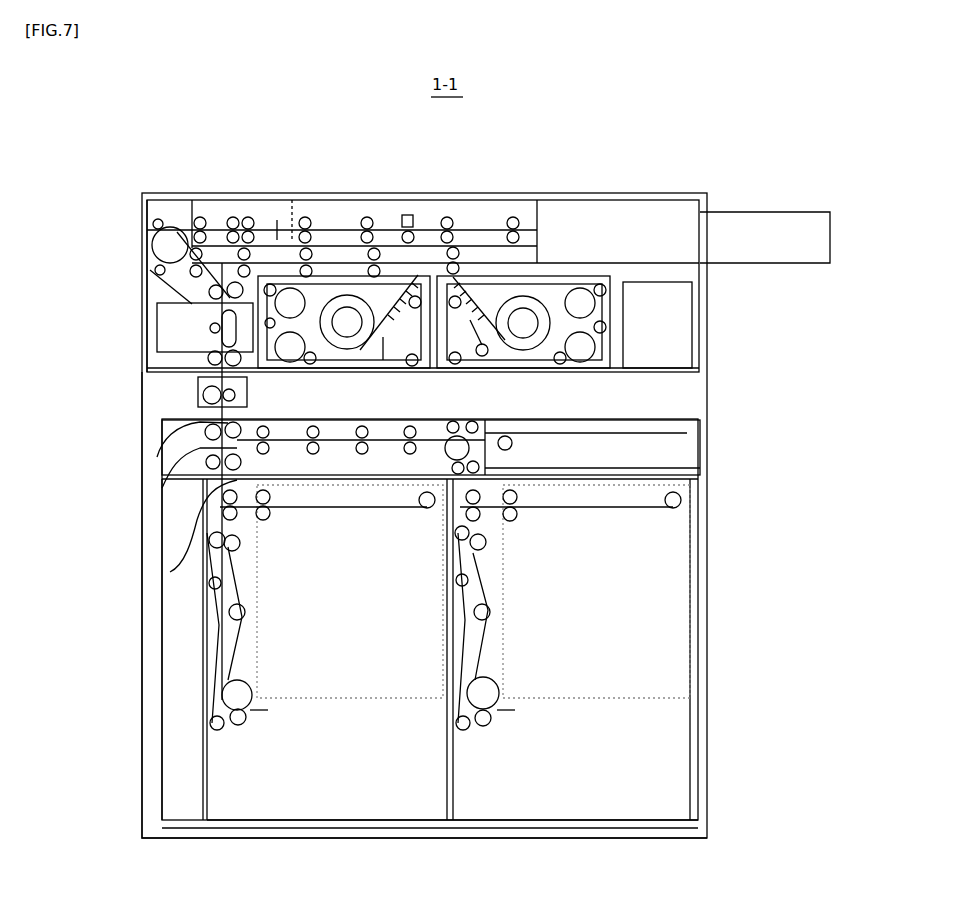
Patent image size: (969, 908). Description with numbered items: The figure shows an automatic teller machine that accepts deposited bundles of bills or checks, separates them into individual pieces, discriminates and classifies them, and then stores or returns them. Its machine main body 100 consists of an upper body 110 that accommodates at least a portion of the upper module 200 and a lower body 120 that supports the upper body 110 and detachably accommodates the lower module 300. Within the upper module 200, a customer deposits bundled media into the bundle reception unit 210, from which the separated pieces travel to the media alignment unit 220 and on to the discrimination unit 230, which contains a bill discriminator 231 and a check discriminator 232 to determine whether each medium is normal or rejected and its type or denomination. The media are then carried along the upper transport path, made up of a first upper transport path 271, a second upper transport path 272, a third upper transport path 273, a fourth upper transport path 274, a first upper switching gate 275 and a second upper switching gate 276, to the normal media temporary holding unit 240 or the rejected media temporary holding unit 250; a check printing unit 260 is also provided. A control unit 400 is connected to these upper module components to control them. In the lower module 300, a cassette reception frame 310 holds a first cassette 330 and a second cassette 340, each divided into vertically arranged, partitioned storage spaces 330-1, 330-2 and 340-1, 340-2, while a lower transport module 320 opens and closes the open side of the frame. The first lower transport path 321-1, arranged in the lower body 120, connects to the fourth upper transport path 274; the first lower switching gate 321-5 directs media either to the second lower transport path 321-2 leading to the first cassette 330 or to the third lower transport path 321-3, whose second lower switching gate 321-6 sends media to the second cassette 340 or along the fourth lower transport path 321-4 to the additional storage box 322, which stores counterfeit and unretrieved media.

The machine main body 100 is at (87, 348).
The upper body 110 is at (143, 363).
The lower body 120 is at (143, 427).
The upper module 200 is at (704, 295).
The bundle reception unit 210 is at (818, 212).
The media alignment unit 220 is at (432, 209).
The discrimination unit 230 is at (241, 212).
The bill discriminator 231 is at (283, 229).
The check discriminator 232 is at (216, 229).
The normal media temporary holding unit 240 is at (334, 277).
The rejected media temporary holding unit 250 is at (613, 338).
The check printing unit 260 is at (159, 308).
The first upper transport path 271 is at (352, 262).
The second upper transport path 272 is at (468, 262).
The third upper transport path 273 is at (209, 292).
The fourth upper transport path 274 is at (206, 358).
The first upper switching gate 275 is at (394, 214).
The second upper switching gate 276 is at (160, 265).
The lower module 300 is at (157, 715).
The cassette reception frame 310 is at (163, 683).
The lower transport module 320 is at (702, 445).
The first lower transport path 321-1 is at (160, 455).
The second lower transport path 321-2 is at (170, 572).
The third lower transport path 321-3 is at (337, 432).
The fourth lower transport path 321-4 is at (507, 428).
The first lower switching gate 321-5 is at (162, 488).
The second lower switching gate 321-6 is at (467, 432).
The additional storage box 322 is at (643, 450).
The first cassette 330 is at (207, 762).
The storage space 330-1 is at (304, 627).
The storage space 330-2 is at (350, 724).
The second cassette 340 is at (697, 774).
The storage space 340-1 is at (617, 631).
The storage space 340-2 is at (617, 730).
The control unit 400 is at (703, 252).